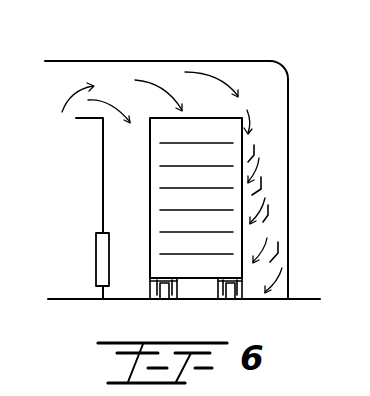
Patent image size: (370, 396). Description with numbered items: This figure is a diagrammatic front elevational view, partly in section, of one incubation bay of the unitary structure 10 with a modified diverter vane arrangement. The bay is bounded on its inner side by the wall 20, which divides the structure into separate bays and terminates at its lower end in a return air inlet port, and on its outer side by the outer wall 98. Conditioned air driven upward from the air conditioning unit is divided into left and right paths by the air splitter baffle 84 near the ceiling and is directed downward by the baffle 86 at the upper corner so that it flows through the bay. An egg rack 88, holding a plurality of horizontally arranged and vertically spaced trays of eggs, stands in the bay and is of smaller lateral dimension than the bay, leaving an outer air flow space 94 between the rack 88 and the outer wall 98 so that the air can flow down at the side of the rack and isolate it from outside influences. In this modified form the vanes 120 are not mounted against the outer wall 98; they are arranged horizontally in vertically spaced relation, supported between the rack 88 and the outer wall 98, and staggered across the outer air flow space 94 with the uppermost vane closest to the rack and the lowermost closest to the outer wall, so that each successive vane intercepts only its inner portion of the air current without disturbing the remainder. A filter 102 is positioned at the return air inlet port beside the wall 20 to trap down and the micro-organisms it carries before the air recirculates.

The unitary structure 10 is at (192, 156).
The wall 20 is at (103, 163).
The air splitter baffle 84 is at (47, 66).
The baffle 86 is at (281, 64).
The egg rack 88 is at (149, 190).
The outer air flow space 94 is at (277, 115).
The outer wall 98 is at (288, 143).
The filter 102 is at (96, 252).
The vanes 120 is at (257, 152).